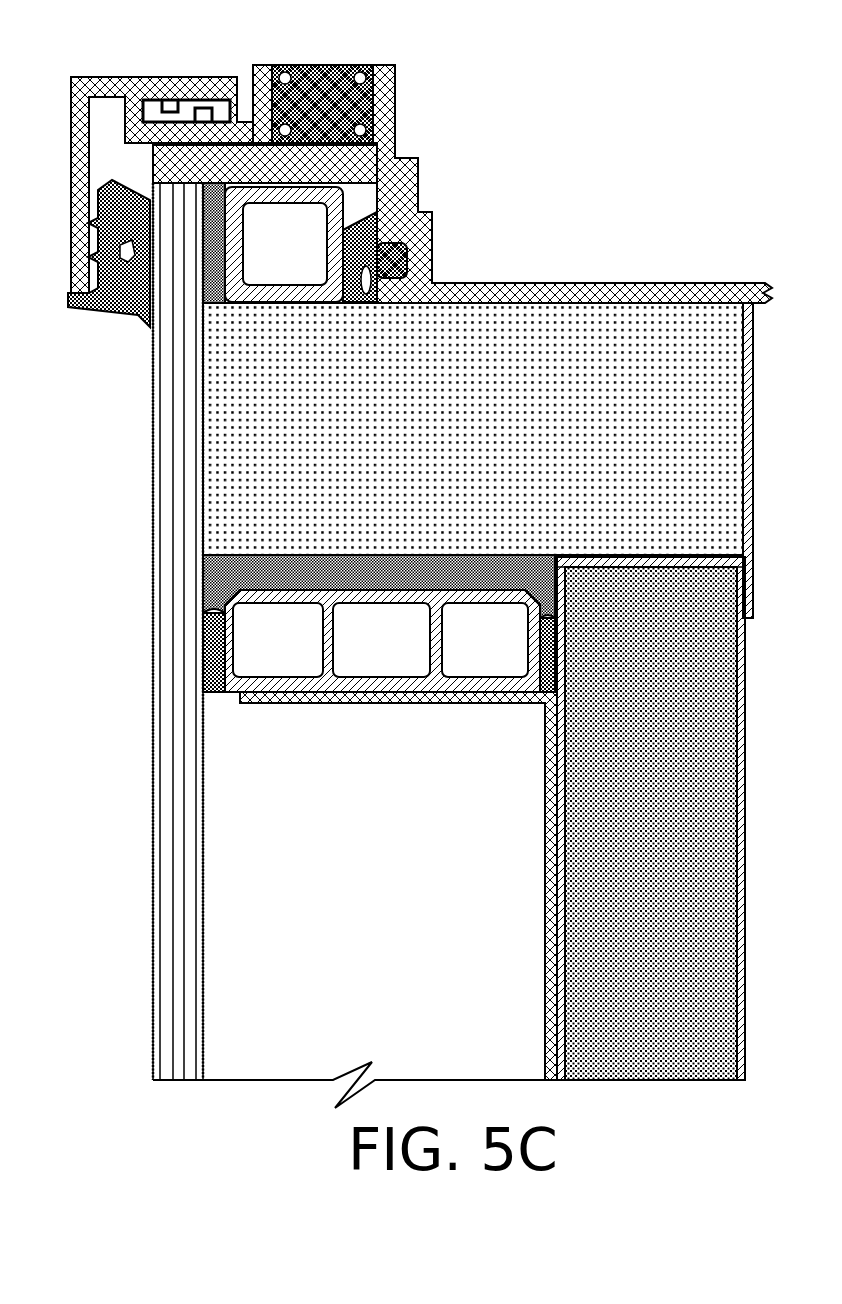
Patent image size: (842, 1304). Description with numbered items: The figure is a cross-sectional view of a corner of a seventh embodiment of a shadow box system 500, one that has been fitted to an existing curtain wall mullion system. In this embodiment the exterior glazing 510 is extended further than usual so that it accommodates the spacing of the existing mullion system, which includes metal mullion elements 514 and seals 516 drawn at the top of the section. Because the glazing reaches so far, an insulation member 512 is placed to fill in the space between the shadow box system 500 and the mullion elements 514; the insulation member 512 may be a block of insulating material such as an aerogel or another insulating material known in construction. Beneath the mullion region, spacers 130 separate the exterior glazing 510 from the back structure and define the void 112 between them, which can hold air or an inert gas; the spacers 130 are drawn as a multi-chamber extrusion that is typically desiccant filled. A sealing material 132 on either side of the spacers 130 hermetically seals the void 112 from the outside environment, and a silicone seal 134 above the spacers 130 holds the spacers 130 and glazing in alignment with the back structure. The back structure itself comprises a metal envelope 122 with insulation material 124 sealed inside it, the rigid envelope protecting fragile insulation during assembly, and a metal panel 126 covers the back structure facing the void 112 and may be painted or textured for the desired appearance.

The shadow box system 500 is at (82, 430).
The exterior glazing 510 is at (160, 853).
The insulation member 512 is at (380, 162).
The metal mullion elements 514 is at (138, 77).
The seals 516 is at (98, 237).
The silicone seal 134 is at (210, 195).
The spacers 130 is at (362, 685).
The sealing material 132 is at (212, 693).
The metal panel 126 is at (552, 953).
The insulation material 124 is at (617, 884).
The metal envelope 122 is at (745, 758).
The void 112 is at (349, 903).